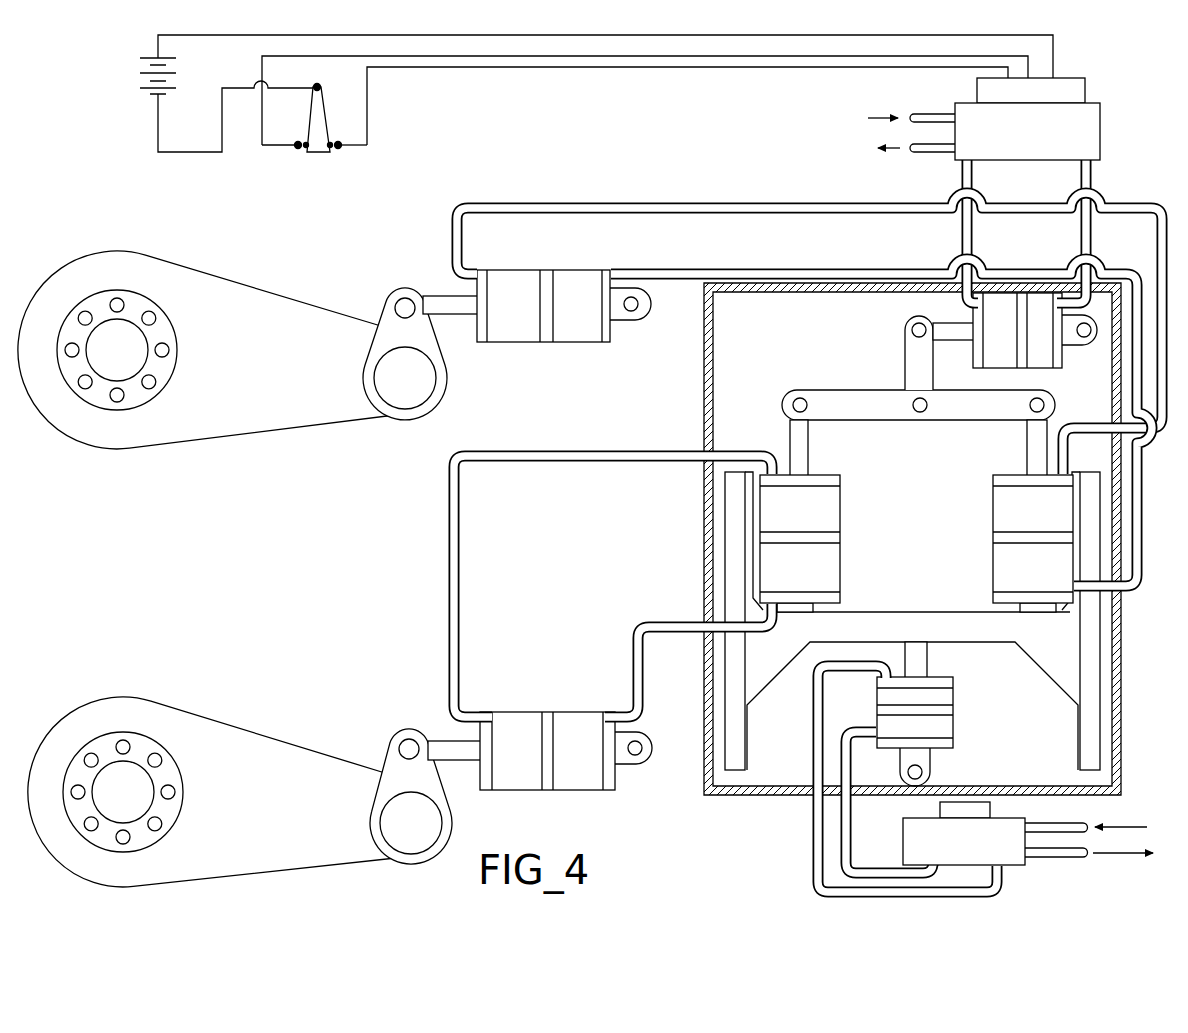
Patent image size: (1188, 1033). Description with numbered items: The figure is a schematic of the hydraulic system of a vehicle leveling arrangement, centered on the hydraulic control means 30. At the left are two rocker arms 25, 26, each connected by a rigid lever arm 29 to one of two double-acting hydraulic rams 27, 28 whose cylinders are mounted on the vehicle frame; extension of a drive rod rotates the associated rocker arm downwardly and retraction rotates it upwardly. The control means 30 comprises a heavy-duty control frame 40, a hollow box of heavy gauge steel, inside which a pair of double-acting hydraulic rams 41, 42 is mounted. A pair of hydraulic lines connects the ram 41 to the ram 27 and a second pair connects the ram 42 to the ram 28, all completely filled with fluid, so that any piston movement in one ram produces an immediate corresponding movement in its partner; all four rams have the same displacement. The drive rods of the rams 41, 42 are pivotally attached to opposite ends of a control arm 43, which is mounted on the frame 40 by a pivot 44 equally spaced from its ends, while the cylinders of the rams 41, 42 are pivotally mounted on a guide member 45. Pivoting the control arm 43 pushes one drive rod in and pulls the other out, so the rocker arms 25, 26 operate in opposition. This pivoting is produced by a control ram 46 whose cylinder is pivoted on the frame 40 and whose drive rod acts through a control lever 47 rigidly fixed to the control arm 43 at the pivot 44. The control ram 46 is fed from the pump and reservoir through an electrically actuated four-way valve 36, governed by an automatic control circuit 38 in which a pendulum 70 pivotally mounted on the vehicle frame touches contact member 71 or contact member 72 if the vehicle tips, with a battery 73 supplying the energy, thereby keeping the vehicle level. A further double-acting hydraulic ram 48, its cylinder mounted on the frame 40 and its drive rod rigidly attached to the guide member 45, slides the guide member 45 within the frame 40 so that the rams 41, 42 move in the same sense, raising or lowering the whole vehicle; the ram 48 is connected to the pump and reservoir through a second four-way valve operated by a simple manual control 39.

The rocker arm 25 is at (250, 730).
The rocker arm 26 is at (268, 432).
The double-acting hydraulic ram 27 is at (568, 790).
The double-acting hydraulic ram 28 is at (565, 341).
The rigid lever arm 29 is at (390, 313).
The hydraulic control means 30 is at (702, 382).
The four-way valve 36 is at (960, 101).
The electrical switch circuit 38 is at (410, 131).
The manual control 39 is at (990, 808).
The control frame 40 is at (706, 553).
The double-acting hydraulic ram 41 is at (840, 518).
The double-acting hydraulic ram 42 is at (990, 496).
The control arm 43 is at (885, 420).
The pivot 44 is at (918, 420).
The guide member 45 is at (896, 618).
The control ram 46 is at (1048, 370).
The control lever 47 is at (905, 362).
The further double-acting hydraulic ram 48 is at (955, 730).
The pendulum 70 is at (318, 153).
The contact member 71 is at (296, 149).
The contact member 72 is at (341, 149).
The battery 73 is at (130, 77).